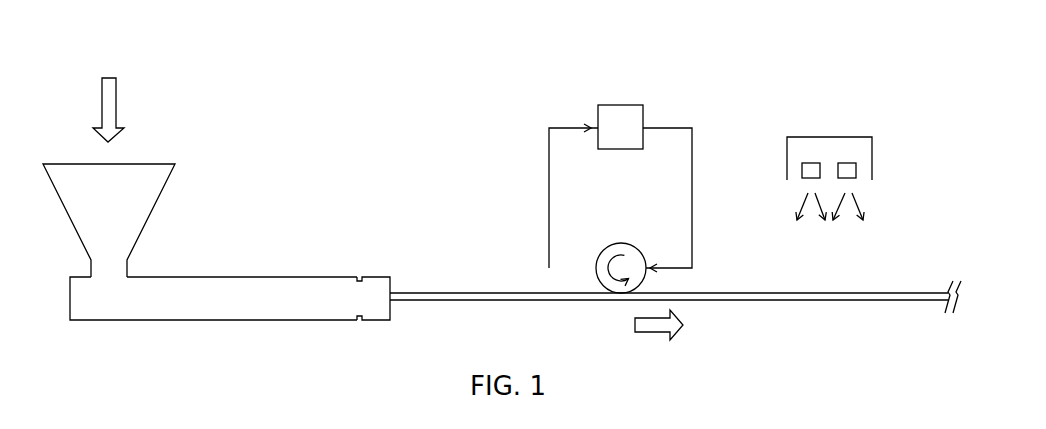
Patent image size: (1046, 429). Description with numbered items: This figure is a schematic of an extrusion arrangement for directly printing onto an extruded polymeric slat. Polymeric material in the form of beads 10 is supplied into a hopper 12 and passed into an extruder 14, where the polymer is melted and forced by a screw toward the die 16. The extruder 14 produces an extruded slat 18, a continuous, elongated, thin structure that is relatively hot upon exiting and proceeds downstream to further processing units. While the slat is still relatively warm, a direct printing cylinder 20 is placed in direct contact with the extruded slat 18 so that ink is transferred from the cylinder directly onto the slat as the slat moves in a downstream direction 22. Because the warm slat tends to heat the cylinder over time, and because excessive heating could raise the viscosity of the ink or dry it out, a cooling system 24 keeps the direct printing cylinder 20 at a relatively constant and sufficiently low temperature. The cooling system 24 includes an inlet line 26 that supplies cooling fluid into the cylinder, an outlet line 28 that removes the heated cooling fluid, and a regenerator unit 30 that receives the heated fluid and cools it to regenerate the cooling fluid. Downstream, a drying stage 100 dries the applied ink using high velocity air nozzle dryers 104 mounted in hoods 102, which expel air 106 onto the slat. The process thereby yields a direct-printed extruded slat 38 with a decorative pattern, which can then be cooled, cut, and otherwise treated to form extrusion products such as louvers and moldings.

The beads 10 is at (116, 97).
The hopper 12 is at (157, 200).
The extruder 14 is at (221, 320).
The die 16 is at (374, 277).
The extruded slat 18 is at (428, 292).
The direct printing cylinder 20 is at (621, 243).
The downstream direction 22 is at (651, 333).
The cooling system 24 is at (616, 181).
The inlet line 26 is at (692, 205).
The outlet line 28 is at (549, 192).
The regenerator unit 30 is at (622, 105).
The direct-printed extruded slat 38 is at (751, 292).
The drying stage 100 is at (869, 167).
The hoods 102 is at (872, 150).
The high velocity air nozzle dryers 104 is at (848, 178).
The air 106 is at (858, 204).